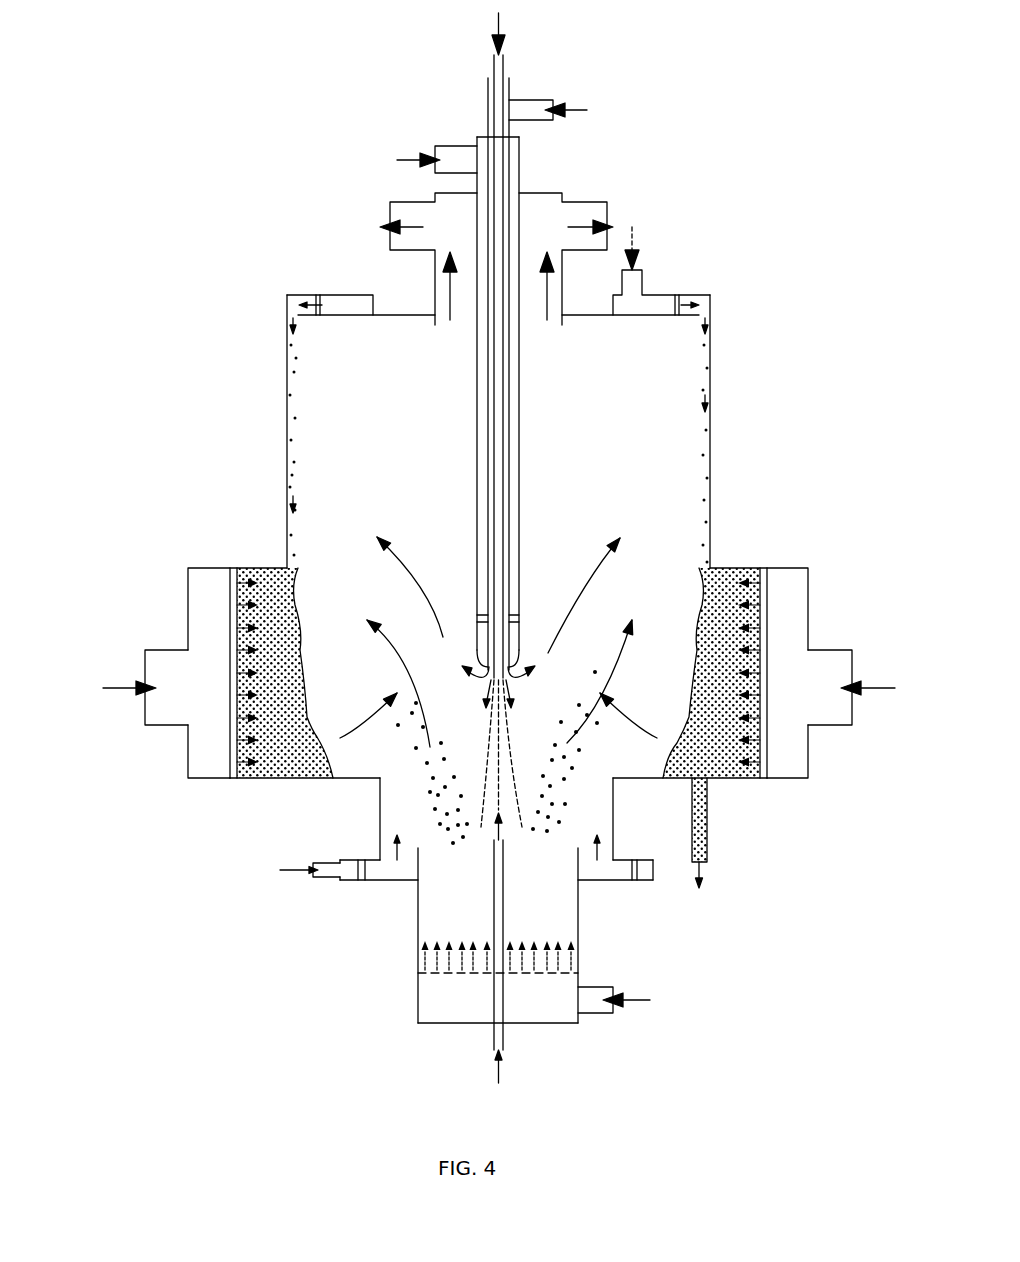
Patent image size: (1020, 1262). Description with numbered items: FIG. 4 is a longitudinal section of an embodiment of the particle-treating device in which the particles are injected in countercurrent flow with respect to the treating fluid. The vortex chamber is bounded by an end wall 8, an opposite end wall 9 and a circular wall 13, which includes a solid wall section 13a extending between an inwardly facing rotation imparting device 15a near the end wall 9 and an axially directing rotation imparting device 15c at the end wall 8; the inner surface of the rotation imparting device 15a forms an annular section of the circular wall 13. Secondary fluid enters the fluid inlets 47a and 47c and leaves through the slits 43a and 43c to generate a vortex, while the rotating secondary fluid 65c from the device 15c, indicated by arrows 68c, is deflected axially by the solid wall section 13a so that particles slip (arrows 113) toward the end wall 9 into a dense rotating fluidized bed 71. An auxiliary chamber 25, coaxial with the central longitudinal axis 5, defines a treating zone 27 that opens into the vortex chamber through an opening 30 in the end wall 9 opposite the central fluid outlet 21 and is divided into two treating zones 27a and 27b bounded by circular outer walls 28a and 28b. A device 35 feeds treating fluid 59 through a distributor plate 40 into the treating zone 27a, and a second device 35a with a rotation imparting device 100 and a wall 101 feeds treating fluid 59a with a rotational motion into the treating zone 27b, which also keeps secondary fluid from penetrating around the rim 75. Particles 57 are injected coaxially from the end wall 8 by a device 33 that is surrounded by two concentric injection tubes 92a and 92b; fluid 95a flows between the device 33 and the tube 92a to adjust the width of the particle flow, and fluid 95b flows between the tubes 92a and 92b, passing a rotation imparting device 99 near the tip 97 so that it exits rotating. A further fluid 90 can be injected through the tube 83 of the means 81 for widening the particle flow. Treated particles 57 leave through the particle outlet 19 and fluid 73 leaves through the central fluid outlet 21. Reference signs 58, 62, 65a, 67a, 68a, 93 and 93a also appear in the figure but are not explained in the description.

The central longitudinal axis 5 is at (456, 872).
The end wall 8 is at (405, 313).
The end wall 9 is at (277, 779).
The circular wall 13 is at (260, 617).
The solid wall section 13a is at (287, 433).
The inwardly facing rotation imparting device 15a is at (175, 582).
The axially directing rotation imparting device 15c is at (345, 318).
The particle outlet 19 is at (708, 843).
The central fluid outlet 21 is at (402, 201).
The auxiliary chamber 25 is at (408, 918).
The treating zone 27 is at (473, 927).
The treating zone 27a is at (569, 928).
The treating zone 27b is at (392, 813).
The circular outer wall 28a is at (417, 938).
The circular outer wall 28b is at (614, 813).
The opening 30 is at (380, 778).
The device for injecting particles 33 is at (493, 68).
The device for feeding treating fluid 35 is at (417, 990).
The second device for feeding treating fluid 35a is at (348, 882).
The distributor plate 40 is at (458, 976).
The slit 43a is at (763, 780).
The slit 43c is at (682, 316).
The fluid inlet 47a is at (827, 726).
The fluid inlet 47c is at (643, 277).
The particles 57 is at (505, 22).
The spray 58 is at (508, 755).
The treating fluid 59 is at (578, 958).
The treating fluid 59a is at (392, 847).
The gas circulation 62 is at (395, 553).
The side gas inlet 65a is at (110, 686).
The rotating secondary fluid 65c is at (634, 241).
The right perforated wall 67a is at (745, 567).
The left perforated wall 68a is at (250, 567).
The arrow 68c is at (300, 295).
The dense rotating fluidized bed 71 is at (278, 661).
The fluid 73 is at (380, 226).
The rim 75 is at (614, 778).
The means for widening the flow of particles 81 is at (504, 910).
The tube 83 is at (504, 1040).
The further fluid 90 is at (500, 1075).
The concentric injection tube 92a is at (488, 95).
The concentric injection tube 92b is at (521, 162).
The gas inlet box 93 is at (448, 146).
The gas inlet tube 93a is at (544, 100).
The fluid 95a is at (575, 107).
The fluid 95b is at (400, 158).
The tip 97 is at (481, 668).
The rotation imparting device 99 is at (478, 614).
The rotation imparting device 100 is at (643, 882).
The wall 101 is at (577, 863).
The arrows 113 is at (700, 403).